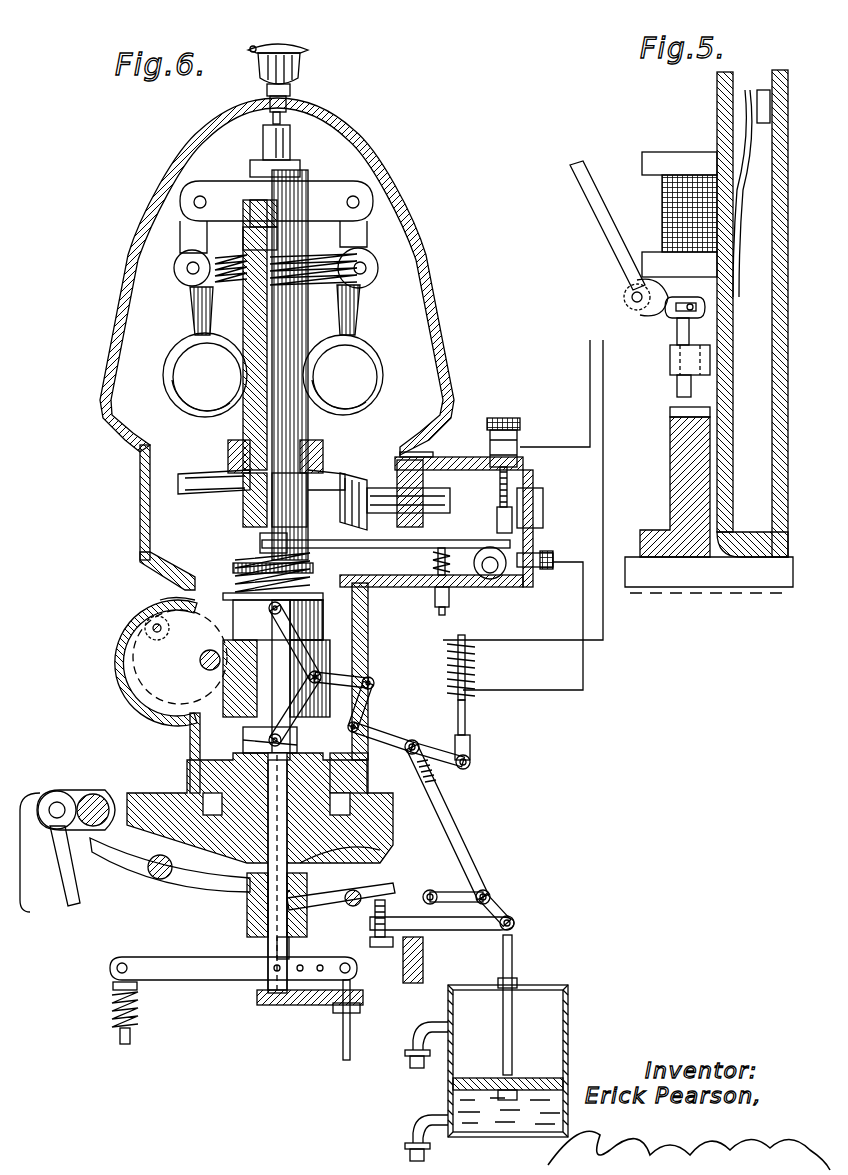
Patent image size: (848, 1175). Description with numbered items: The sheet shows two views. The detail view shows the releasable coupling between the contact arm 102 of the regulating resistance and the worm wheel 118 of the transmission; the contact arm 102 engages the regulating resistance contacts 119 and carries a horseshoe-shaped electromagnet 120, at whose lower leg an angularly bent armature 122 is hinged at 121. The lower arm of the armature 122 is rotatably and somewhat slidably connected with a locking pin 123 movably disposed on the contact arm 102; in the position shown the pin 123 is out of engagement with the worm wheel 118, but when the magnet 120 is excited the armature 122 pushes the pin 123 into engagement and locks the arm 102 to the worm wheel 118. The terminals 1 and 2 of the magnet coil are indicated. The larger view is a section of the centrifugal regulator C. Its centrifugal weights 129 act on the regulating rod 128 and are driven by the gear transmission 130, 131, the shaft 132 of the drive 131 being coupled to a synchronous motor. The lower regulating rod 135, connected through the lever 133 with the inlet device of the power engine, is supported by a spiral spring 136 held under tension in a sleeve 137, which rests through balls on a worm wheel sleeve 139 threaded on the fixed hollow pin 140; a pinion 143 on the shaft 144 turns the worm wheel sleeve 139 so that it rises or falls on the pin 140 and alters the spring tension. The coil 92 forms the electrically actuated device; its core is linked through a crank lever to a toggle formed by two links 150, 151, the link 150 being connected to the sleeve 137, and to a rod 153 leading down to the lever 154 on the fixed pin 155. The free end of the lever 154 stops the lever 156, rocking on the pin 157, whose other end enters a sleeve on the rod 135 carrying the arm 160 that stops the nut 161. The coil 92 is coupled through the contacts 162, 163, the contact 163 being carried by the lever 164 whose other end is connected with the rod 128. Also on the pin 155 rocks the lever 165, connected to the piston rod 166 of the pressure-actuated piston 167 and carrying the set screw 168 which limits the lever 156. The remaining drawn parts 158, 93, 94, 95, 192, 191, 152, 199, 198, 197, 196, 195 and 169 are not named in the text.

In FIG. 6, the centrifugal regulator C is at (178, 172).
In FIG. 6, the centrifugal weights 129 is at (185, 350).
In FIG. 6, the gear transmission 130 is at (178, 488).
In FIG. 6, the drive gear 131 is at (360, 487).
In FIG. 6, the shaft 132 is at (433, 510).
In FIG. 6, the regulating rod 128 is at (257, 537).
In FIG. 6, the spring 158 is at (247, 565).
In FIG. 6, the contact 163 is at (507, 540).
In FIG. 6, the adjusting screw 93 is at (580, 432).
In FIG. 6, the contact 162 is at (503, 518).
In FIG. 6, the screw 94 is at (572, 563).
In FIG. 6, the wire 95 is at (600, 500).
In FIG. 6, the lever 164 is at (437, 560).
In FIG. 6, the link 150 is at (190, 593).
In FIG. 6, the wheel 192 is at (185, 648).
In FIG. 6, the shaft 191 is at (203, 660).
In FIG. 6, the shaft 144 is at (157, 628).
In FIG. 6, the pinion 143 is at (225, 600).
In FIG. 6, the spiral spring 136 is at (323, 607).
In FIG. 6, the worm wheel sleeve 139 is at (337, 643).
In FIG. 6, the fixed hollow pin 140 is at (250, 730).
In FIG. 6, the plate 152 is at (247, 740).
In FIG. 6, the sleeve 137 is at (310, 637).
In FIG. 6, the link 151 is at (297, 730).
In FIG. 6, the link 199 is at (357, 673).
In FIG. 6, the link 198 is at (367, 698).
In FIG. 6, the link 197 is at (363, 722).
In FIG. 6, the link 196 is at (443, 750).
In FIG. 6, the rod 195 is at (465, 710).
In FIG. 6, the electrically actuated device 92 is at (473, 665).
In FIG. 6, the rod 153 is at (443, 803).
In FIG. 6, the lower regulating rod 135 is at (267, 900).
In FIG. 6, the lever 156 is at (377, 887).
In FIG. 6, the pin 157 is at (350, 906).
In FIG. 6, the set screw 168 is at (381, 947).
In FIG. 6, the collar 169 is at (289, 940).
In FIG. 6, the lever 133 is at (163, 953).
In FIG. 6, the arm 160 is at (307, 1002).
In FIG. 6, the nut 161 is at (355, 1013).
In FIG. 6, the pin 155 is at (430, 893).
In FIG. 6, the lever 154 is at (487, 903).
In FIG. 6, the lever 165 is at (470, 922).
In FIG. 6, the piston rod 166 is at (513, 958).
In FIG. 6, the piston 167 is at (470, 1078).
In FIG. 5, the contact arm 102 is at (717, 90).
In FIG. 5, the regulating resistance contacts 119 is at (763, 97).
In FIG. 5, the horseshoe-shaped electromagnet 120 is at (657, 147).
In FIG. 5, the coil terminal 1 is at (643, 170).
In FIG. 5, the coil terminal 2 is at (663, 250).
In FIG. 5, the angularly bent armature 122 is at (592, 210).
In FIG. 5, the hinge 121 is at (635, 300).
In FIG. 5, the locking pin 123 is at (680, 387).
In FIG. 5, the worm wheel 118 is at (683, 450).